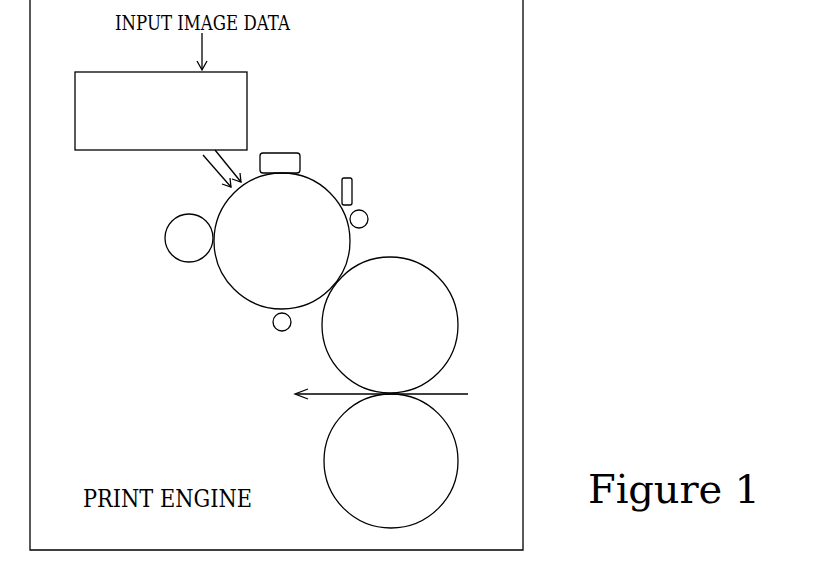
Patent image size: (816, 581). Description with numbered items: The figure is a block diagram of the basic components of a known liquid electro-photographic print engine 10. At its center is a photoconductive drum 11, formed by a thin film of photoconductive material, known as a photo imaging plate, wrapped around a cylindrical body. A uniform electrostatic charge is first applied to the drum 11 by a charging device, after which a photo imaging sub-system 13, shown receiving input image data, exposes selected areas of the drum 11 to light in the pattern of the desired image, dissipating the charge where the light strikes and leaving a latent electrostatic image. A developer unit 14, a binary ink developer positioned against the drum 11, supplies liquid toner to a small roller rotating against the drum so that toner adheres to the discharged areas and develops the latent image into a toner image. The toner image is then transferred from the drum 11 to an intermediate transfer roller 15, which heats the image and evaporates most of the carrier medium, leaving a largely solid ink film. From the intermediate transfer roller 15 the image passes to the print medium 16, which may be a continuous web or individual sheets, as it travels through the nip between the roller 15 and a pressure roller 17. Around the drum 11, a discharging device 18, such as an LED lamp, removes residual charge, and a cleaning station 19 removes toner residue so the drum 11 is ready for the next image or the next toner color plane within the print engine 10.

The LEP print engine 10 is at (540, 282).
The photoconductive drum 11 is at (293, 250).
The photo imaging sub-system 13 is at (250, 107).
The developer unit 14 is at (172, 256).
The intermediate transfer roller 15 is at (403, 336).
The print medium 16 is at (323, 397).
The pressure roller 17 is at (403, 471).
The discharging device 18 is at (276, 329).
The cleaning station 19 is at (354, 193).